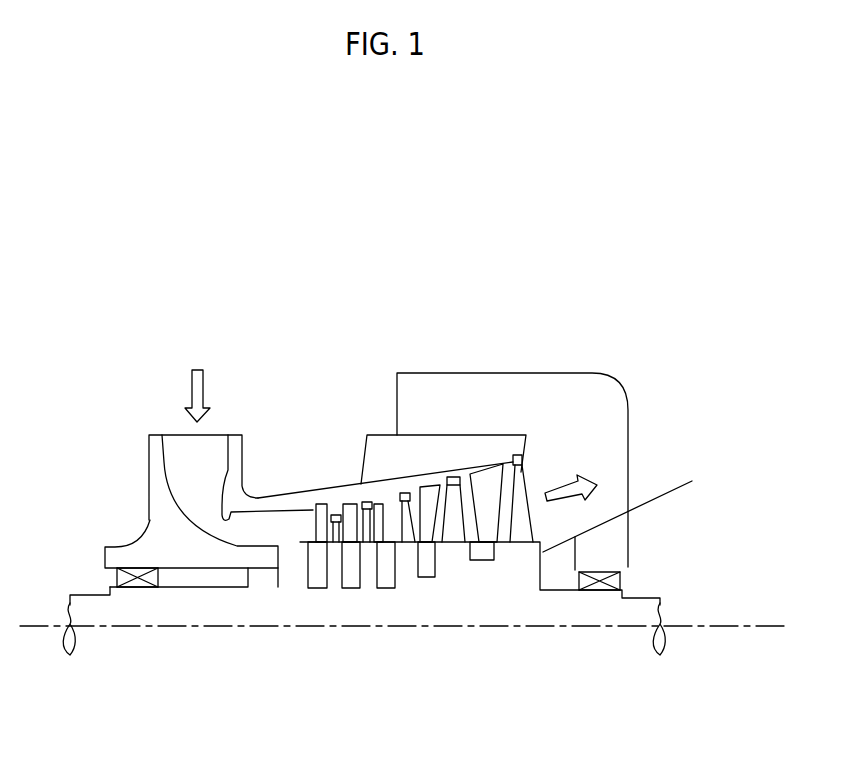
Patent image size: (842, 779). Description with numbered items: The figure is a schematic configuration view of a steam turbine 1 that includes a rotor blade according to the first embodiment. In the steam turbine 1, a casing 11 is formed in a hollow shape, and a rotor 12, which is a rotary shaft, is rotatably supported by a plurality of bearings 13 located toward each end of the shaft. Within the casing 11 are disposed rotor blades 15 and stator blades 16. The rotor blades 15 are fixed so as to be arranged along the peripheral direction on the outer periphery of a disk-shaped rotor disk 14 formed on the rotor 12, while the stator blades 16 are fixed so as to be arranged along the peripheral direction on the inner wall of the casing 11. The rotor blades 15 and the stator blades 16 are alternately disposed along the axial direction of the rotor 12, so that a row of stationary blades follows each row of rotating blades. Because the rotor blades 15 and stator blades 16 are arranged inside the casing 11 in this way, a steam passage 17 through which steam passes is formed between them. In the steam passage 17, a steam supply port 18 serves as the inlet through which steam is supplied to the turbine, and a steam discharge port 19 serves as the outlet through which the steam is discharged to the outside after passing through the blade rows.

The steam turbine 1 is at (338, 366).
The casing 11 is at (158, 530).
The rotor 12 is at (340, 610).
The bearings 13 is at (137, 578).
The rotor disk 14 is at (335, 562).
The rotor blades 15 is at (335, 513).
The stator blades 16 is at (320, 507).
The steam passage 17 is at (277, 520).
The steam supply port 18 is at (175, 448).
The steam discharge port 19 is at (620, 468).